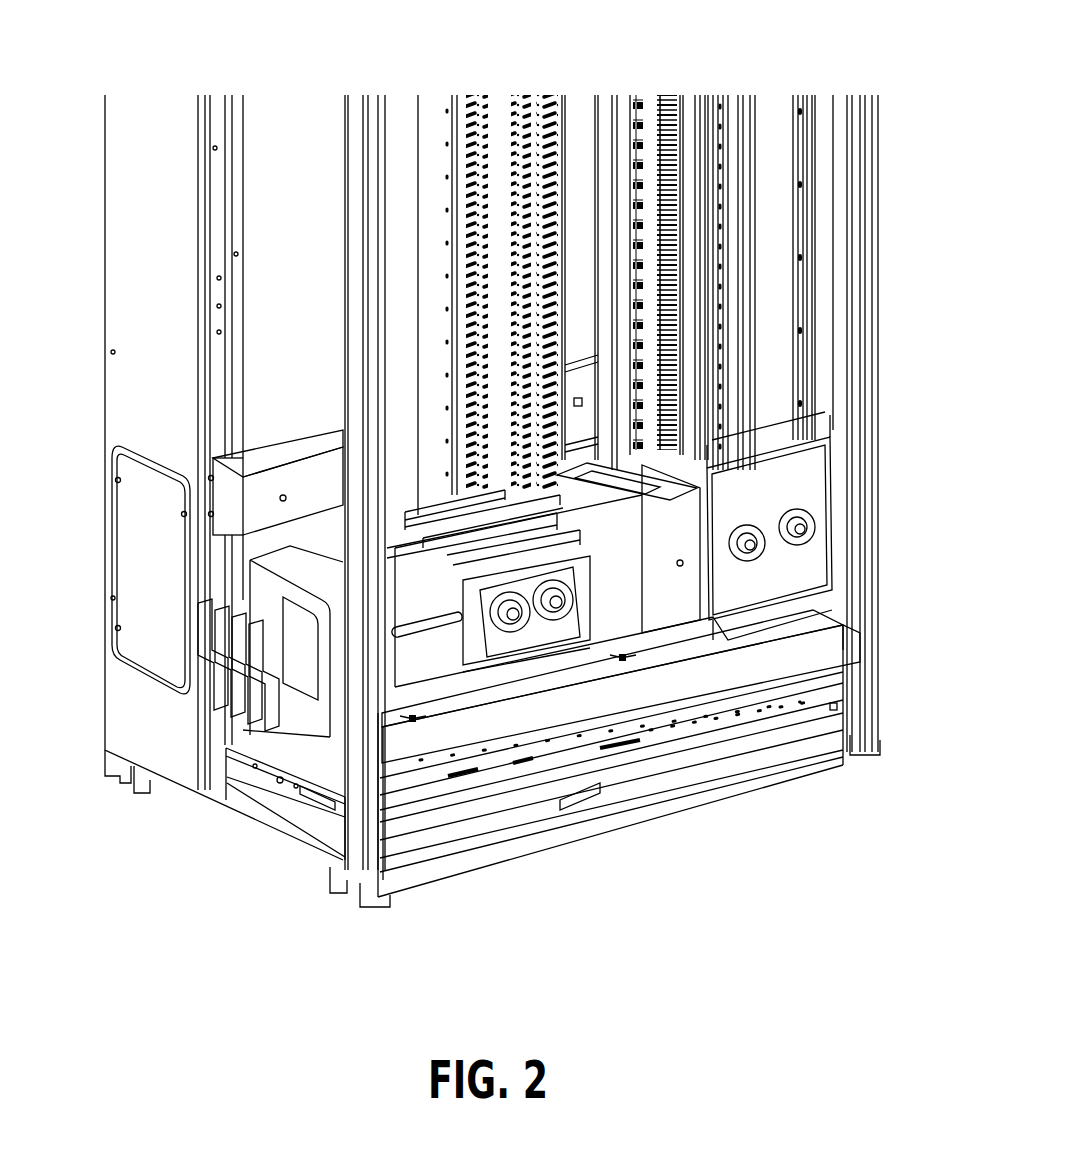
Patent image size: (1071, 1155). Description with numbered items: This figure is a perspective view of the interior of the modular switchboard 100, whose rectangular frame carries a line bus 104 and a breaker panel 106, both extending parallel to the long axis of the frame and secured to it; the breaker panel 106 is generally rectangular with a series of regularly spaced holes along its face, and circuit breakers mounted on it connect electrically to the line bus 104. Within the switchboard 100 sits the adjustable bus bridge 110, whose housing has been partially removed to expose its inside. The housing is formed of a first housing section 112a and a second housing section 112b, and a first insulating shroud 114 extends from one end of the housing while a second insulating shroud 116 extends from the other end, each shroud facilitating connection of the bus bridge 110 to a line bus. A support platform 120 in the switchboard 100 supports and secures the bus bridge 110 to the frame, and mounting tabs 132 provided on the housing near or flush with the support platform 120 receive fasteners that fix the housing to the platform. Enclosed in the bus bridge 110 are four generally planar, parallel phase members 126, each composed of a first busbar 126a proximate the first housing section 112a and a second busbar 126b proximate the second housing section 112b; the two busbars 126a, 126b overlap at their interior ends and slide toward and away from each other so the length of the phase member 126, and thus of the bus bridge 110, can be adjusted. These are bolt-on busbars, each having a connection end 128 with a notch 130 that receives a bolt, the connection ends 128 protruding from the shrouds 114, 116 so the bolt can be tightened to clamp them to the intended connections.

The modular switchboard 100 is at (224, 50).
The line bus 104 is at (744, 84).
The breaker panel 106 is at (494, 84).
The adjustable bus bridge 110 is at (553, 678).
The first housing section 112a is at (680, 612).
The second housing section 112b is at (258, 738).
The first insulating shroud 114 is at (730, 600).
The second insulating shroud 116 is at (222, 766).
The support platform 120 is at (868, 658).
The phase member 126 is at (424, 664).
The first busbar 126a is at (653, 572).
The second busbar 126b is at (448, 617).
The connection end 128 is at (336, 700).
The notch 130 is at (188, 652).
The mounting tab 132 is at (418, 727).